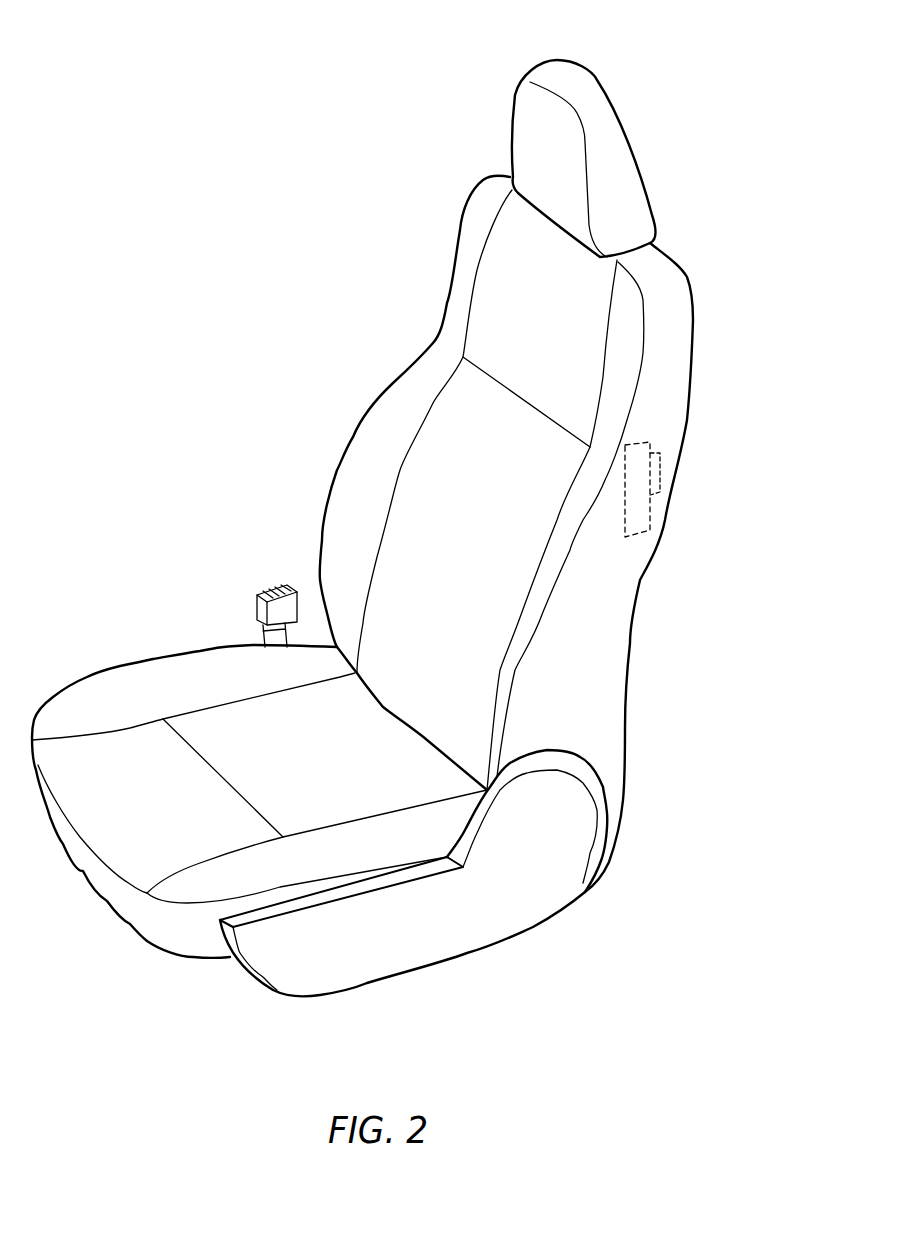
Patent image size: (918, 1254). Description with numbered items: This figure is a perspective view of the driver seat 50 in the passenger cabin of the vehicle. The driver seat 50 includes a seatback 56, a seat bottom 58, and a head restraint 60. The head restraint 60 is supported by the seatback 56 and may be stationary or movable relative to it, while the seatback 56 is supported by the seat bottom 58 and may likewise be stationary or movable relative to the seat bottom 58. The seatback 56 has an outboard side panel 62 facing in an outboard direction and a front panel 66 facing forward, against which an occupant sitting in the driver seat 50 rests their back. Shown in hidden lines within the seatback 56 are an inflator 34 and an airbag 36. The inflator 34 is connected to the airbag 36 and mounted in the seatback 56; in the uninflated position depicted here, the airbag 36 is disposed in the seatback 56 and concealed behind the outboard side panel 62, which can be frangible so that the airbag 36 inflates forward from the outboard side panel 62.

The driver seat 50 is at (322, 230).
The seatback 56 is at (681, 268).
The seat bottom 58 is at (163, 952).
The head restraint 60 is at (597, 80).
The outboard side panel 62 is at (600, 612).
The front panel 66 is at (443, 433).
The inflator 34 is at (660, 470).
The airbag 36 is at (650, 517).